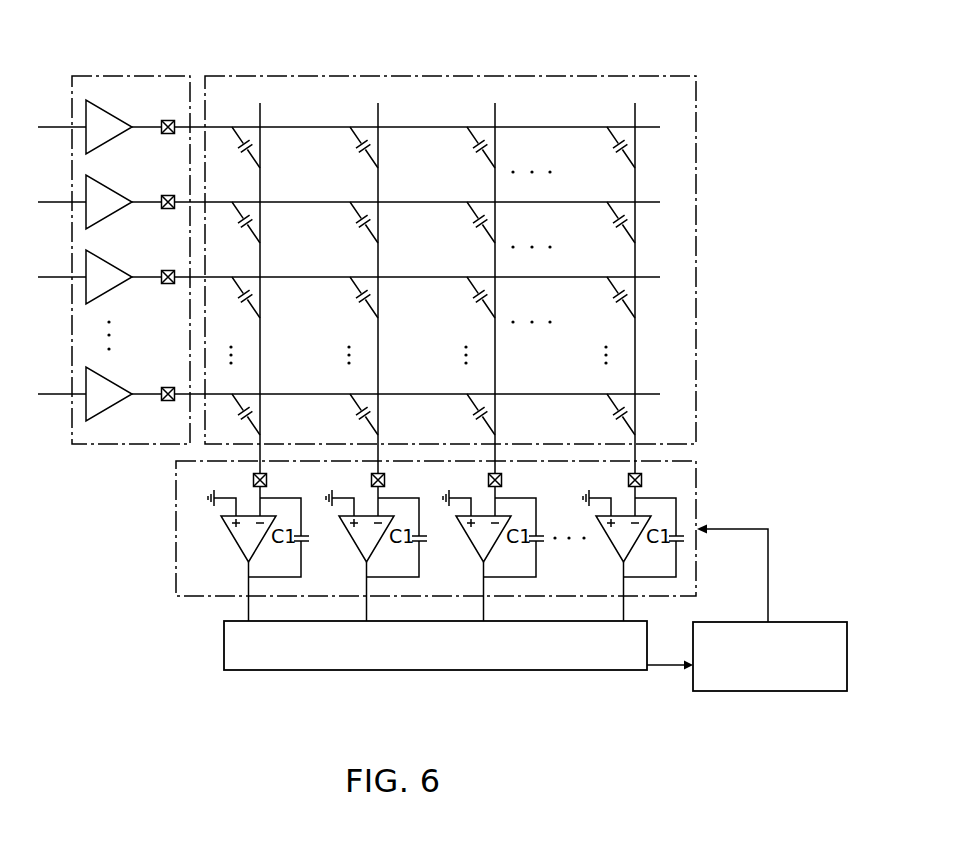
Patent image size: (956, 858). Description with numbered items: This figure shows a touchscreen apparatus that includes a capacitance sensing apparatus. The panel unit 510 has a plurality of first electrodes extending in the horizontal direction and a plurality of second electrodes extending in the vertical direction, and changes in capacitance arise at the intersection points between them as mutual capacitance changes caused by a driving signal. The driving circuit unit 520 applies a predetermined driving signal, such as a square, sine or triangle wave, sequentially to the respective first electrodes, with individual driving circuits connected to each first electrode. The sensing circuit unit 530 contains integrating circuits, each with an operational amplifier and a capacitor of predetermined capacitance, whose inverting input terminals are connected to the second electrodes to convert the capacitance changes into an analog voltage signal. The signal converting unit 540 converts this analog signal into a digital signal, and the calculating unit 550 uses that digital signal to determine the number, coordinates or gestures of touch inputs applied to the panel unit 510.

The panel unit 510 is at (466, 76).
The driving circuit unit 520 is at (130, 76).
The sensing circuit unit 530 is at (176, 530).
The signal converting unit 540 is at (436, 670).
The calculating unit 550 is at (768, 691).